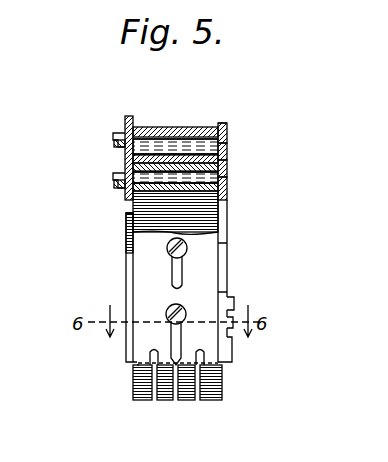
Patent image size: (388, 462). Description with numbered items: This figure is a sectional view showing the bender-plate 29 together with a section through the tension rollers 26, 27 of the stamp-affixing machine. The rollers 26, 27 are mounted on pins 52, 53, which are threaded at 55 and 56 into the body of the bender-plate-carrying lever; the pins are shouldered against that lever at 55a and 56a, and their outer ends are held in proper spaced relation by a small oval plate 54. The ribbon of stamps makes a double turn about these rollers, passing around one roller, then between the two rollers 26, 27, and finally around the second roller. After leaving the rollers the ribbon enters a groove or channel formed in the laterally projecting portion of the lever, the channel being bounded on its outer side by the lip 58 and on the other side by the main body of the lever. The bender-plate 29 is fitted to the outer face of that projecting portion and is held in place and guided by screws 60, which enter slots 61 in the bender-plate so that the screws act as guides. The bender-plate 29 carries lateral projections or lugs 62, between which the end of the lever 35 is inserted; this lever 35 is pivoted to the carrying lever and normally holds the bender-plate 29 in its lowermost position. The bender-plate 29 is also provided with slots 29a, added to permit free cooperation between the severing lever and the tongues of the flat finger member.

The roller 26 is at (178, 133).
The roller 27 is at (228, 164).
The bender-plate 29 is at (205, 273).
The slots 29a is at (172, 410).
The lever 35 is at (230, 327).
The pin 52 is at (147, 146).
The pin 53 is at (232, 188).
The oval plate 54 is at (125, 124).
The threaded portion 55 is at (231, 150).
The shoulder 55a is at (230, 131).
The threaded portion 56 is at (229, 176).
The shoulder 56a is at (228, 168).
The lip 58 is at (126, 294).
The screws 60 is at (167, 246).
The slots 61 is at (171, 275).
The lugs 62 is at (234, 307).